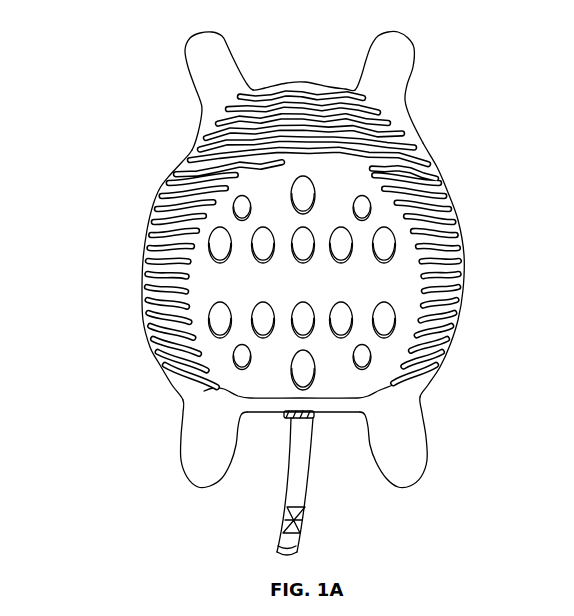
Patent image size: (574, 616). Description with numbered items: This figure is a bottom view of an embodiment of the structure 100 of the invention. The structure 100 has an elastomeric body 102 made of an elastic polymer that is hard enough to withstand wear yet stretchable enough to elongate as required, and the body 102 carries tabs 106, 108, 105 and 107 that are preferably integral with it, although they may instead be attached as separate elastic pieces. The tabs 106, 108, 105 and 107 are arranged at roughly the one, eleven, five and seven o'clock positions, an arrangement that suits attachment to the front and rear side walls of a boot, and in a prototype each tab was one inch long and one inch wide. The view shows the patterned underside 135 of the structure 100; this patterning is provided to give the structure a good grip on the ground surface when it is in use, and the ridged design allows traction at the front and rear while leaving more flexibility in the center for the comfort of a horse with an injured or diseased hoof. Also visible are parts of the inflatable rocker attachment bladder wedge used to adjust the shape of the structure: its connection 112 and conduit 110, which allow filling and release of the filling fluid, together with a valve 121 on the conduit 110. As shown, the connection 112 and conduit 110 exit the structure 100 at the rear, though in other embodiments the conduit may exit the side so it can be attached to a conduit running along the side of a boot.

The structure 100 is at (98, 66).
The elastomeric body 102 is at (441, 167).
The tab 105 is at (200, 486).
The tab 106 is at (404, 32).
The tab 107 is at (404, 486).
The tab 108 is at (201, 31).
The conduit 110 is at (309, 480).
The connection 112 is at (289, 418).
The valve 121 is at (279, 516).
The patterned underside 135 is at (454, 199).